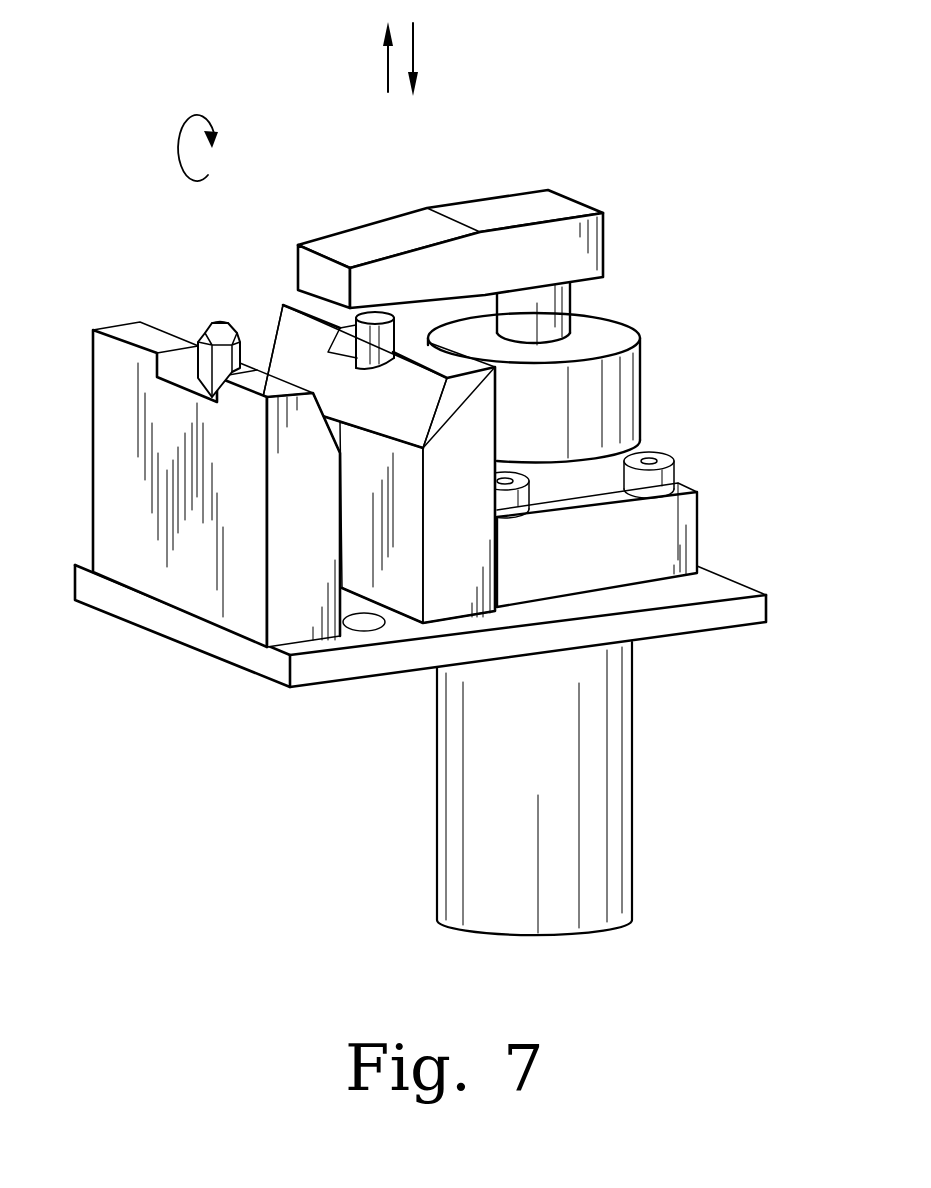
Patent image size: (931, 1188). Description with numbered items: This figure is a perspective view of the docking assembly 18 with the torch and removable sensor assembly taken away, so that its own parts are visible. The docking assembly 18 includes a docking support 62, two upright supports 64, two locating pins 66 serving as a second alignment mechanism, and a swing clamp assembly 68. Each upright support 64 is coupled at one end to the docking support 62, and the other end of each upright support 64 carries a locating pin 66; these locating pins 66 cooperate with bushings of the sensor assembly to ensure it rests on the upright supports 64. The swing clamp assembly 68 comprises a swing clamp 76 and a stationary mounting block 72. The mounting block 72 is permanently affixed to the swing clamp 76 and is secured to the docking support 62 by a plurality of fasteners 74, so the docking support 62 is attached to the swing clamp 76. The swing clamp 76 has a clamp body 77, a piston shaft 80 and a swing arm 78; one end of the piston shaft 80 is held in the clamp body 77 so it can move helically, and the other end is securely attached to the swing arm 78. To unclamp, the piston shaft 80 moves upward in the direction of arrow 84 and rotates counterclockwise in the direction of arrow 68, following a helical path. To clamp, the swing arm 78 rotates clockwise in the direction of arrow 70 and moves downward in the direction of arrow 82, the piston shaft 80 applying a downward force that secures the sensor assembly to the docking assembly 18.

The docking assembly 18 is at (735, 238).
The docking support 62 is at (768, 597).
The upright supports 64 is at (95, 330).
The locating pins 66 is at (208, 333).
The swing clamp assembly 68 is at (459, 197).
The arrow 70 is at (180, 166).
The mounting block 72 is at (700, 520).
The fasteners 74 is at (678, 462).
The swing clamp 76 is at (595, 371).
The clamp body 77 is at (645, 392).
The swing arm 78 is at (487, 205).
The piston shaft 80 is at (577, 292).
The arrow 82 is at (414, 34).
The arrow 84 is at (386, 72).